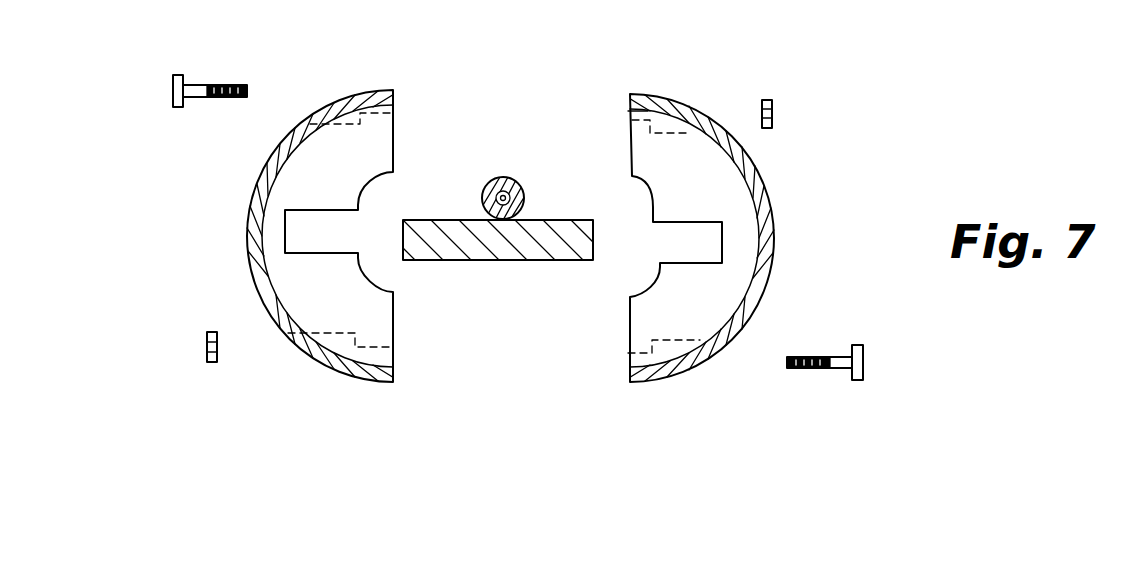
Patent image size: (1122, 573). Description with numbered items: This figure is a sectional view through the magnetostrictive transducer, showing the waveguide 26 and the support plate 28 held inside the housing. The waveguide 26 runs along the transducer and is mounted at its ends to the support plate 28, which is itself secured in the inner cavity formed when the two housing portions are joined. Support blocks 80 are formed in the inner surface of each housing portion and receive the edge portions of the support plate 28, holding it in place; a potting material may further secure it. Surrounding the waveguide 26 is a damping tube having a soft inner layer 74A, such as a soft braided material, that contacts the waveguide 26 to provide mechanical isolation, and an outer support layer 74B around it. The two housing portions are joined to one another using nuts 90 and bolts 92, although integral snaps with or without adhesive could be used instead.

The waveguide 26 is at (504, 160).
The support plate 28 is at (483, 262).
The inner layer 74A is at (512, 180).
The outer support layer 74B is at (498, 177).
The support blocks 80 is at (358, 205).
The nuts 90 is at (773, 103).
The bolts 92 is at (173, 88).